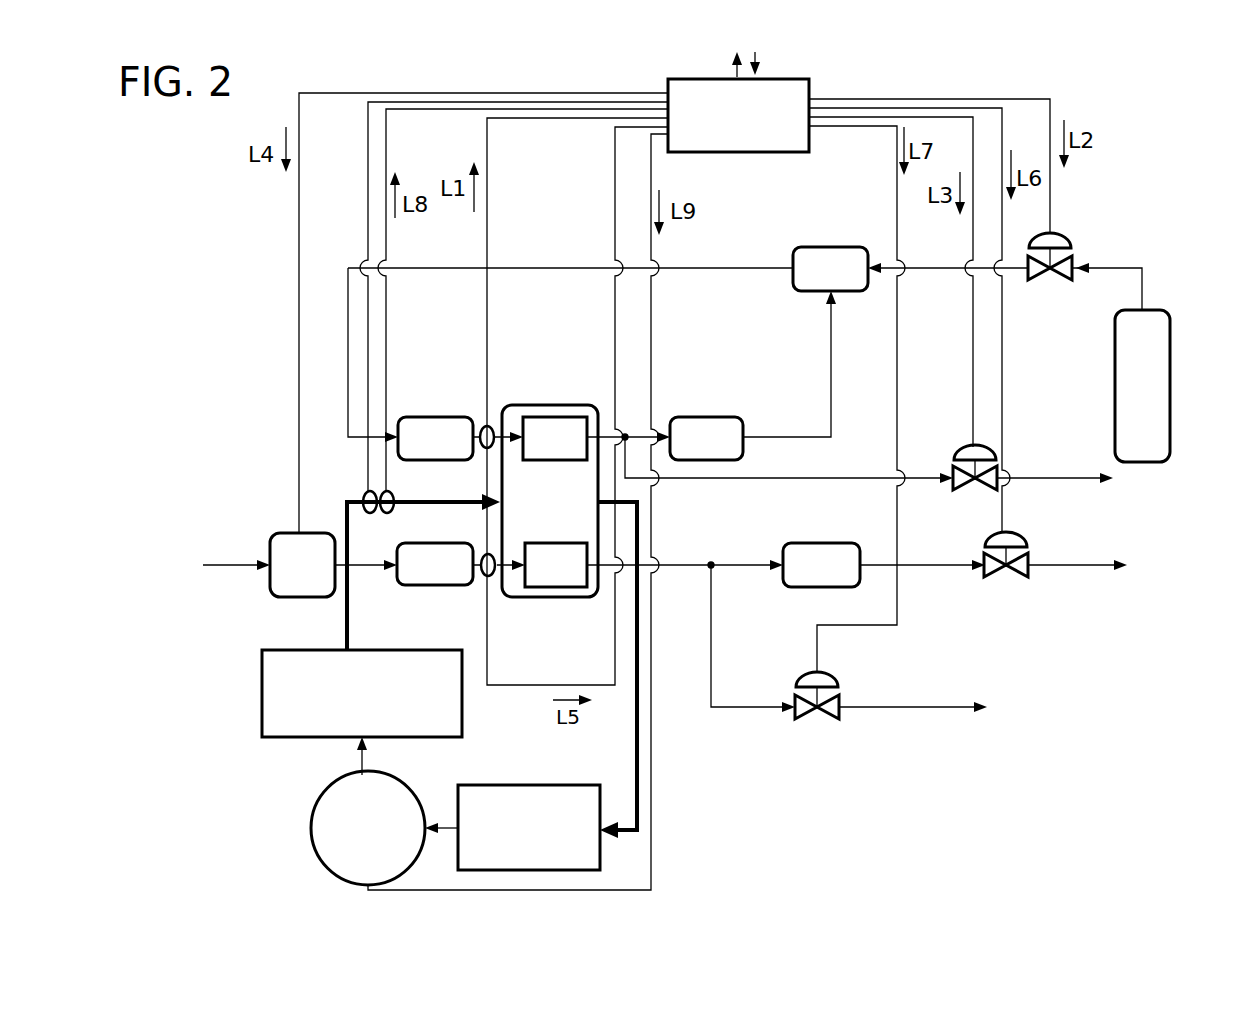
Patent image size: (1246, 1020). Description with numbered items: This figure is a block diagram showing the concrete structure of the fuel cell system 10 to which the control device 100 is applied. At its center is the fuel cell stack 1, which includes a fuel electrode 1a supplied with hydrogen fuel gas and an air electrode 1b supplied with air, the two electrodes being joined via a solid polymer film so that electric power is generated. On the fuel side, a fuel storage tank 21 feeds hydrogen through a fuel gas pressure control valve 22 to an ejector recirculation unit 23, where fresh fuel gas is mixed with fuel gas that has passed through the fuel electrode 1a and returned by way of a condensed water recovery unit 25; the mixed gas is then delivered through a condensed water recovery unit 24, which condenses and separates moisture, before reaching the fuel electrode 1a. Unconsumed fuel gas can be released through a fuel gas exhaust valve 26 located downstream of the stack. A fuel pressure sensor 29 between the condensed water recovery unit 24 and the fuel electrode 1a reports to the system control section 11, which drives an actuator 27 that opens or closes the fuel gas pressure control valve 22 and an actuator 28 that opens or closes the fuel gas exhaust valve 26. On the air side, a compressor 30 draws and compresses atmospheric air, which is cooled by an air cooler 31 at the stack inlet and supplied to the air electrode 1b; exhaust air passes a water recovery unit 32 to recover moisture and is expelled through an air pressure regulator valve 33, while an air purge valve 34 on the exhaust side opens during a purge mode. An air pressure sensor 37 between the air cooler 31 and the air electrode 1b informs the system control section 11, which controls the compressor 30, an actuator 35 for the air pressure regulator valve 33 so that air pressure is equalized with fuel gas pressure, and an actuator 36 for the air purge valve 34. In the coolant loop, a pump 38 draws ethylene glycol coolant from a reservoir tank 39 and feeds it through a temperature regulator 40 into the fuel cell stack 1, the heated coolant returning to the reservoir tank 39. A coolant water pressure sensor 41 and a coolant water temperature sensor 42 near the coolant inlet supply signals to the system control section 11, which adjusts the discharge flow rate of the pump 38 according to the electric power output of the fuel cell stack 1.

The fuel cell stack 1 is at (540, 405).
The fuel electrode 1a is at (568, 417).
The air electrode 1b is at (548, 588).
The fuel cell system 10 is at (1055, 689).
The system control section 11 is at (752, 152).
The fuel storage tank 21 is at (1172, 365).
The fuel gas pressure control valve 22 is at (1046, 284).
The ejector recirculation unit 23 is at (835, 247).
The condensed water recovery unit 24 is at (431, 417).
The condensed water recovery unit 25 is at (708, 417).
The fuel gas exhaust valve 26 is at (978, 492).
The actuator 27 is at (1068, 237).
The actuator 28 is at (966, 447).
The fuel pressure sensor 29 is at (484, 428).
The compressor 30 is at (286, 533).
The air cooler 31 is at (427, 585).
The water recovery unit 32 is at (824, 543).
The air pressure regulator valve 33 is at (1020, 579).
The air purge valve 34 is at (826, 718).
The actuator 35 is at (1020, 535).
The actuator 36 is at (830, 674).
The air pressure sensor 37 is at (488, 577).
The pump 38 is at (311, 826).
The reservoir tank 39 is at (524, 785).
The temperature regulator 40 is at (262, 690).
The coolant water pressure sensor 41 is at (392, 497).
The coolant water temperature sensor 42 is at (365, 491).
The control device 100 is at (1050, 88).